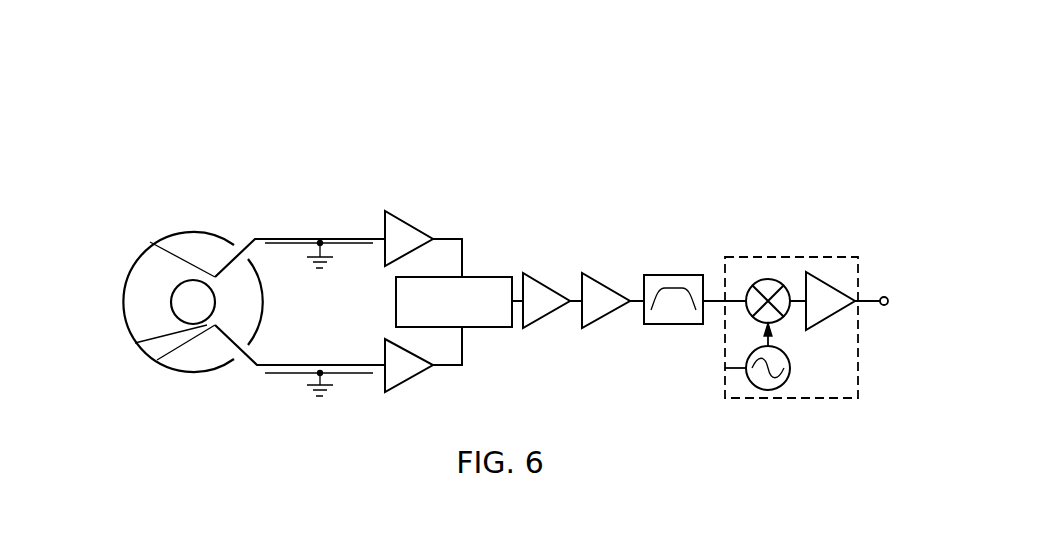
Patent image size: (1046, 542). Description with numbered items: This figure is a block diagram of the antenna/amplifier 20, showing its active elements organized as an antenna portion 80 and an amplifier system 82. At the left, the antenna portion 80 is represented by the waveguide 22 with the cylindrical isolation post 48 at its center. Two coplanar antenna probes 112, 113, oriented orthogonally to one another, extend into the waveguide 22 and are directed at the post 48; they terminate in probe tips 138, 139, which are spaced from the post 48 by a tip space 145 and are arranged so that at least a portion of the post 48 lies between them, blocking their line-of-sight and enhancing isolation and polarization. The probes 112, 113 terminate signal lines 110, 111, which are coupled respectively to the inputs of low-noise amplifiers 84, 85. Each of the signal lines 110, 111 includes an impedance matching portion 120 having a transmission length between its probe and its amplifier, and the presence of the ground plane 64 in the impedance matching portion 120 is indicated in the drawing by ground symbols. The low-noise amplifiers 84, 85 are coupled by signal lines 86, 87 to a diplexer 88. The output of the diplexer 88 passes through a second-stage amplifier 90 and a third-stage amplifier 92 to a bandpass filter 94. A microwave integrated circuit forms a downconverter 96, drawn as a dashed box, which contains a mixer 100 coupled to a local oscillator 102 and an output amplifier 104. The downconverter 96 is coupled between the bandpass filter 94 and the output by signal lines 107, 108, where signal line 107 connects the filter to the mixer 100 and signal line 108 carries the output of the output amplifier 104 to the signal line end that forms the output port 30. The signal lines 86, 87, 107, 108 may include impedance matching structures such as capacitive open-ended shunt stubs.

The antenna/amplifier 20 is at (203, 172).
The antenna portion 80 is at (121, 240).
The waveguide 22 is at (123, 282).
The isolation post 48 is at (171, 301).
The probe tip 138 is at (150, 240).
The probe tip 139 is at (157, 360).
The tip space 145 is at (135, 343).
The antenna probe 112 is at (226, 265).
The antenna probe 113 is at (228, 340).
The impedance matching portion 120 is at (278, 243).
The signal line 110 is at (329, 225).
The signal line 111 is at (334, 349).
The ground plane 64 is at (360, 373).
The amplifier system 82 is at (416, 160).
The low-noise amplifier 84 is at (397, 217).
The low-noise amplifier 85 is at (395, 385).
The signal line 86 is at (443, 237).
The signal line 87 is at (441, 368).
The diplexer 88 is at (478, 276).
The second-stage amplifier 90 is at (540, 278).
The third-stage amplifier 92 is at (598, 278).
The bandpass filter 94 is at (668, 276).
The signal line 107 is at (713, 302).
The downconverter 96 is at (745, 242).
The mixer 100 is at (768, 277).
The local oscillator 102 is at (723, 370).
The output amplifier 104 is at (835, 280).
The signal line 108 is at (865, 303).
The output port 30 is at (884, 292).